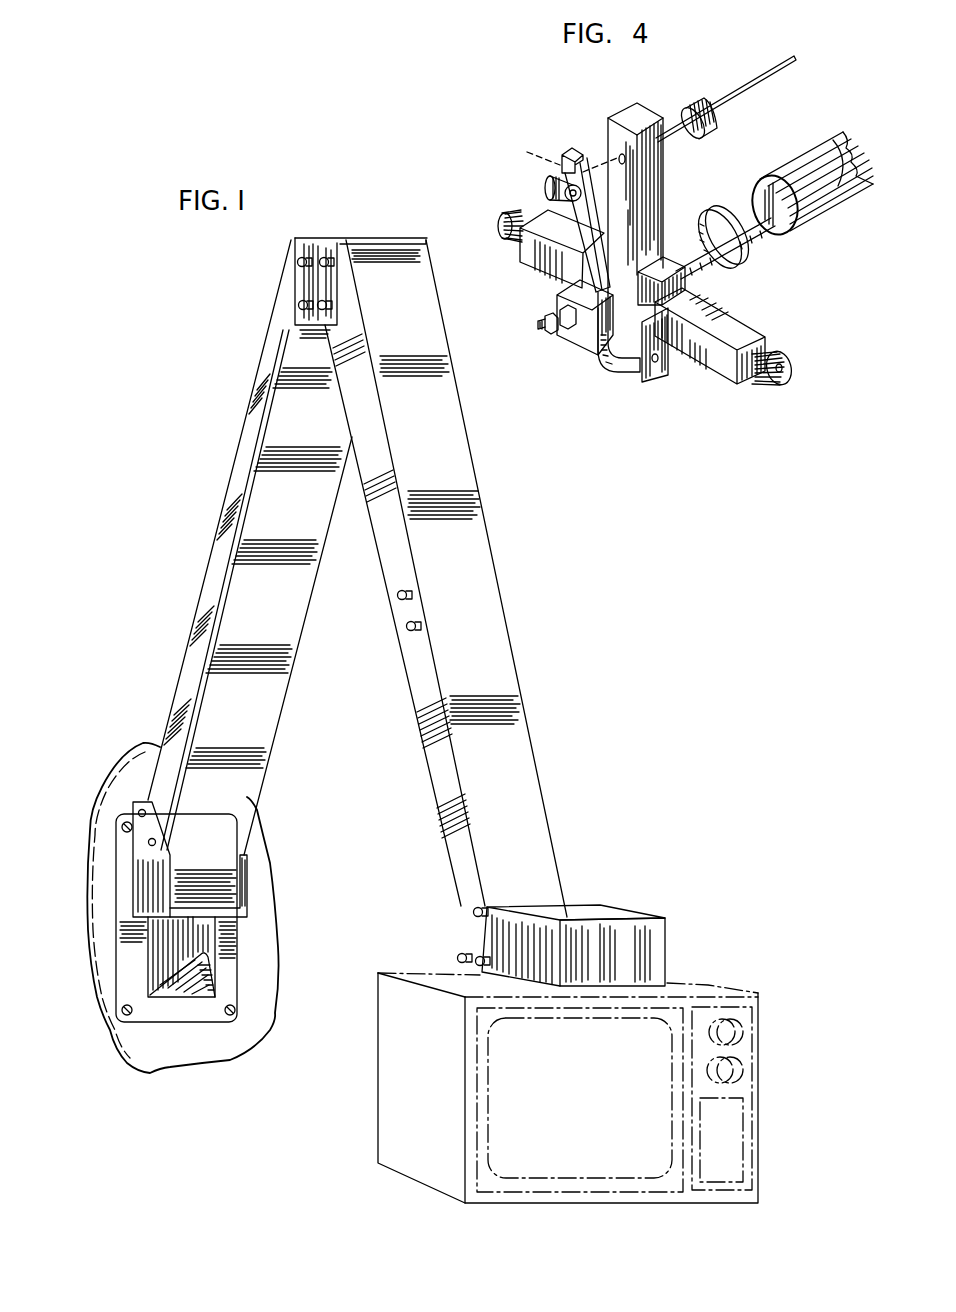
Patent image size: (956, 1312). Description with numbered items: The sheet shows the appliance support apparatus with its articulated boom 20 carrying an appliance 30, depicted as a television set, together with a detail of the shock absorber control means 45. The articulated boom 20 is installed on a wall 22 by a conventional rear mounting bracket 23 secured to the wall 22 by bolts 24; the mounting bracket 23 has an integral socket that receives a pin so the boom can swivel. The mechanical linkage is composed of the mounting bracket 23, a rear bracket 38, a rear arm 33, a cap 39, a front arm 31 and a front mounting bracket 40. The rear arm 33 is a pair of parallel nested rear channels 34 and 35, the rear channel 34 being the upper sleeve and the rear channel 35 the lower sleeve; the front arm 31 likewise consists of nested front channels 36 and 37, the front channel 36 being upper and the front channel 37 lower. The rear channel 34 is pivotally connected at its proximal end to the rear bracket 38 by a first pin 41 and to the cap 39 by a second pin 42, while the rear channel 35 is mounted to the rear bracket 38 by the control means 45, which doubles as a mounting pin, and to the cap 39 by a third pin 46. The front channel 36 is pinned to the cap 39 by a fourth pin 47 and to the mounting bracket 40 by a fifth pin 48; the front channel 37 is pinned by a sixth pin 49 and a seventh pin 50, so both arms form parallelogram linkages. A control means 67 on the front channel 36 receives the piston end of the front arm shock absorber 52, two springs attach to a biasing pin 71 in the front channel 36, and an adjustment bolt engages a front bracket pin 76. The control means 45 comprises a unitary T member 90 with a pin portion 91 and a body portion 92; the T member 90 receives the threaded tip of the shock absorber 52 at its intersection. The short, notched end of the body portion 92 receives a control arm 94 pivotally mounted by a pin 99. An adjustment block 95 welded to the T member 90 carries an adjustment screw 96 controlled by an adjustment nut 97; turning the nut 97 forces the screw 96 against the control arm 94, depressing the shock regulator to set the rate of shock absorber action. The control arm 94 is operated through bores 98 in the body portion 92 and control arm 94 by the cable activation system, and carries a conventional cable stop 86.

In FIG. 1, the articulated boom 20 is at (560, 604).
In FIG. 1, the wall 22 is at (170, 1053).
In FIG. 1, the rear mounting bracket 23 is at (130, 970).
In FIG. 1, the bolts 24 is at (235, 1010).
In FIG. 1, the appliance 30 is at (410, 1082).
In FIG. 1, the front arm 31 is at (458, 500).
In FIG. 1, the rear arm 33 is at (220, 570).
In FIG. 1, the rear channel 34 is at (247, 463).
In FIG. 1, the rear channel 35 is at (270, 708).
In FIG. 1, the front channel 36 is at (540, 805).
In FIG. 1, the front channel 37 is at (427, 762).
In FIG. 1, the rear bracket 38 is at (145, 893).
In FIG. 1, the cap 39 is at (300, 247).
In FIG. 1, the mounting bracket 40 is at (660, 936).
In FIG. 1, the first pin 41 is at (140, 812).
In FIG. 1, the second pin 42 is at (297, 266).
In FIG. 1, the control means 45 is at (150, 843).
In FIG. 4, the control means 45 is at (556, 132).
In FIG. 1, the third pin 46 is at (298, 304).
In FIG. 1, the fourth pin 47 is at (336, 255).
In FIG. 1, the fifth pin 48 is at (474, 912).
In FIG. 1, the sixth pin 49 is at (324, 311).
In FIG. 1, the seventh pin 50 is at (458, 958).
In FIG. 4, the shock absorber 52 is at (808, 142).
In FIG. 1, the control means 67 is at (398, 590).
In FIG. 1, the biasing pin 71 is at (406, 622).
In FIG. 1, the front bracket pin 76 is at (478, 975).
In FIG. 4, the cable stop 86 is at (550, 183).
In FIG. 4, the T member 90 is at (675, 347).
In FIG. 4, the pin portion 91 is at (738, 323).
In FIG. 4, the body portion 92 is at (658, 190).
In FIG. 4, the control arm 94 is at (605, 360).
In FIG. 4, the adjustment block 95 is at (560, 280).
In FIG. 4, the adjustment screw 96 is at (545, 325).
In FIG. 4, the adjustment nut 97 is at (568, 330).
In FIG. 4, the bores 98 is at (575, 150).
In FIG. 4, the pin 99 is at (668, 370).